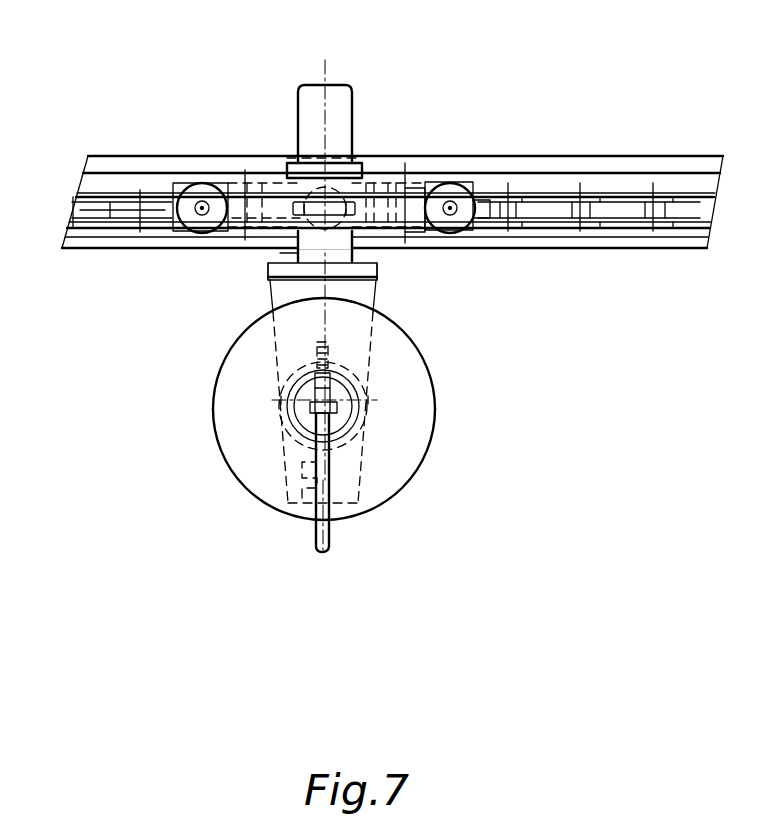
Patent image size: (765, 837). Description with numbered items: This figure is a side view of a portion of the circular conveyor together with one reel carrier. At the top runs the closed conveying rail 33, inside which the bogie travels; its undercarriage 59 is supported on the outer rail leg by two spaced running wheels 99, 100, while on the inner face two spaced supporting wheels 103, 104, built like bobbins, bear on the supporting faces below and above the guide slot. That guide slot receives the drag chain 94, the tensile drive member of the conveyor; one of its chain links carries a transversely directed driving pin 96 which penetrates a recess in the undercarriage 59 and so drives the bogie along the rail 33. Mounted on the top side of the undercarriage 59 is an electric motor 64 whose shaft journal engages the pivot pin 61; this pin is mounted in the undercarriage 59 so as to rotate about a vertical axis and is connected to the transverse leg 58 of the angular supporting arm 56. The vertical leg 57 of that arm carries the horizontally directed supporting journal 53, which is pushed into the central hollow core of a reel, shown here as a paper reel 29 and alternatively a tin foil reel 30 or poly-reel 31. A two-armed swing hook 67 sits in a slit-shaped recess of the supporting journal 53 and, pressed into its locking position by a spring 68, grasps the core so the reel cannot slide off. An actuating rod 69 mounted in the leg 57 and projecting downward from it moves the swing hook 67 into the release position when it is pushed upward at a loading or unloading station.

The conveying rail 33 is at (585, 153).
The running wheel 99 is at (189, 182).
The running wheel 100 is at (462, 185).
The supporting wheel 103 is at (265, 157).
The supporting wheel 104 is at (393, 183).
The driving pin 96 is at (366, 183).
The undercarriage 59 is at (411, 187).
The electric motor 64 is at (310, 107).
The pivot pin 61 is at (298, 253).
The supporting arm 56 is at (388, 286).
The transverse leg 58 is at (268, 272).
The vertical leg 57 is at (363, 293).
The drag chain 94 is at (620, 228).
The paper reel 29 is at (417, 383).
The tin foil reel 30 is at (324, 409).
The poly-reel 31 is at (324, 409).
The supporting journal 53 is at (335, 413).
The spring 68 is at (312, 356).
The swing hook 67 is at (318, 373).
The actuating rod 69 is at (330, 540).